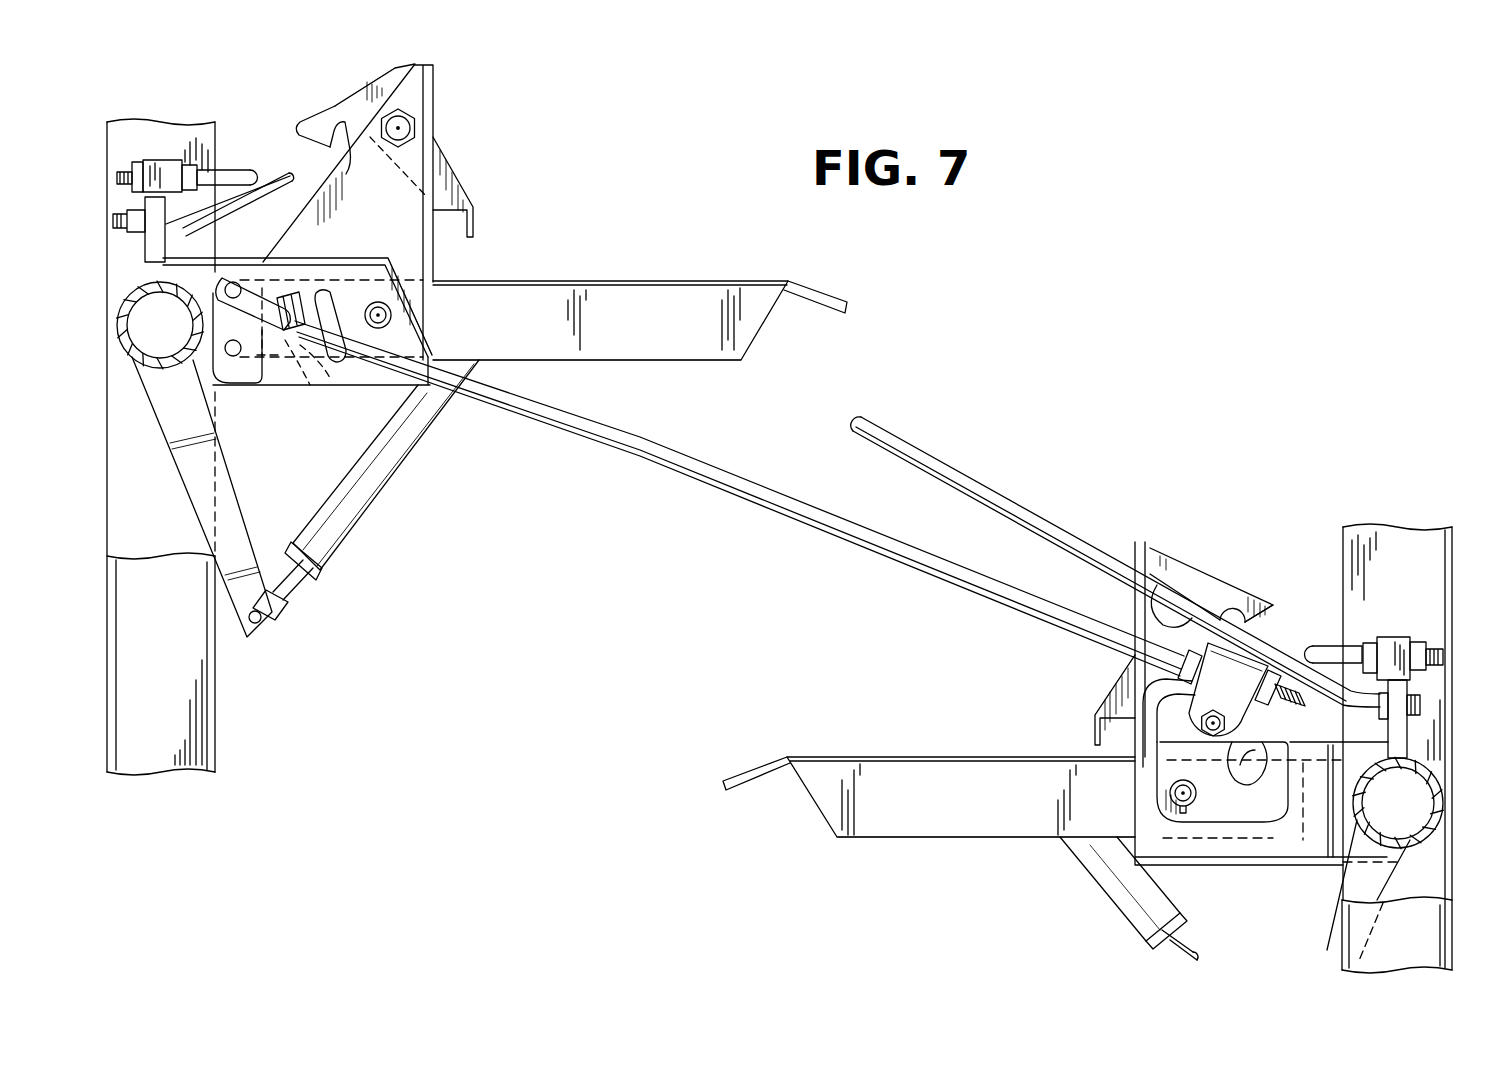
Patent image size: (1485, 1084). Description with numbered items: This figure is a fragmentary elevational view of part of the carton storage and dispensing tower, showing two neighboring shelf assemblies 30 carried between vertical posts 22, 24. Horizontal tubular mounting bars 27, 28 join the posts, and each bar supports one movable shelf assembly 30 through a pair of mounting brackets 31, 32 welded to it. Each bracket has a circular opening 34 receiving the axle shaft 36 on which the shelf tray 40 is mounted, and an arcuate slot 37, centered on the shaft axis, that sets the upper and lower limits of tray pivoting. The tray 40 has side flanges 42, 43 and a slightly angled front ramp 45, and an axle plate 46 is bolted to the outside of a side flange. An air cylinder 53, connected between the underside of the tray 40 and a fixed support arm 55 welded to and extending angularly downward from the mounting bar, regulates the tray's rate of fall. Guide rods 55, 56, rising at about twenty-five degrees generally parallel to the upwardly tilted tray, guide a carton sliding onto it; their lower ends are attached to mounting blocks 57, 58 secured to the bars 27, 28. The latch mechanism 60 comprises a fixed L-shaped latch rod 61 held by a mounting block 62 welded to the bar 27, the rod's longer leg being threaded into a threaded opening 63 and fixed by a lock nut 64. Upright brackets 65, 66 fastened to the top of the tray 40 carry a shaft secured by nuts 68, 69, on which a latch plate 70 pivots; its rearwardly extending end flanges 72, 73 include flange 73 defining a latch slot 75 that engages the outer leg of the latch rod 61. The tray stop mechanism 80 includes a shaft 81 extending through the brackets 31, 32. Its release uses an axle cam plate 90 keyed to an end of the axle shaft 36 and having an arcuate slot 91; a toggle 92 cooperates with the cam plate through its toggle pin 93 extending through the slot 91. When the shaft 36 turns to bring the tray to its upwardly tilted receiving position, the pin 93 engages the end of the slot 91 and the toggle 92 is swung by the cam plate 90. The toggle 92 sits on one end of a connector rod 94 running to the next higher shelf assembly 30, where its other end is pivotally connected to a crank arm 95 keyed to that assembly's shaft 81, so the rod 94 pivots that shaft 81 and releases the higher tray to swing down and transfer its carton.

The vertical post 22 is at (216, 740).
The vertical post 24 is at (1363, 537).
The horizontal tubular mounting bar 27 is at (132, 362).
The horizontal tubular mounting bar 28 is at (1417, 848).
The movable shelf assembly 30 is at (510, 82).
The mounting bracket 31 is at (290, 388).
The mounting bracket 32 is at (1330, 877).
The circular opening 34 is at (430, 338).
The axle shaft 36 is at (392, 315).
The arcuate slot 37 is at (343, 277).
The shelf tray 40 is at (690, 280).
The side flange 42 is at (642, 353).
The side flange 43 is at (913, 827).
The front ramp 45 is at (832, 295).
The axle plate 46 is at (333, 380).
The air cylinder 53 is at (427, 453).
The fixed support arm 55 is at (278, 197).
The guide rod 56 is at (890, 438).
The mounting block 57 is at (143, 243).
The mounting block 58 is at (1408, 727).
The latch mechanism 60 is at (277, 118).
The L-shaped latch rod 61 is at (233, 168).
The mounting block 62 is at (165, 163).
The threaded opening 63 is at (190, 164).
The lock nut 64 is at (143, 143).
The upright bracket 65 is at (433, 73).
The upright bracket 66 is at (1140, 670).
The nut 68 is at (415, 130).
The nut 69 is at (1133, 603).
The latch plate 70 is at (383, 75).
The end flange 72 is at (353, 102).
The end flange 73 is at (317, 115).
The latch slot 75 is at (337, 163).
The tray stop mechanism 80 is at (284, 362).
The shaft 81 is at (205, 373).
The axle cam plate 90 is at (1220, 823).
The arcuate slot 91 is at (1243, 768).
The toggle 92 is at (1242, 662).
The toggle pin 93 is at (1250, 718).
The connector rod 94 is at (722, 478).
The crank arm 95 is at (217, 345).